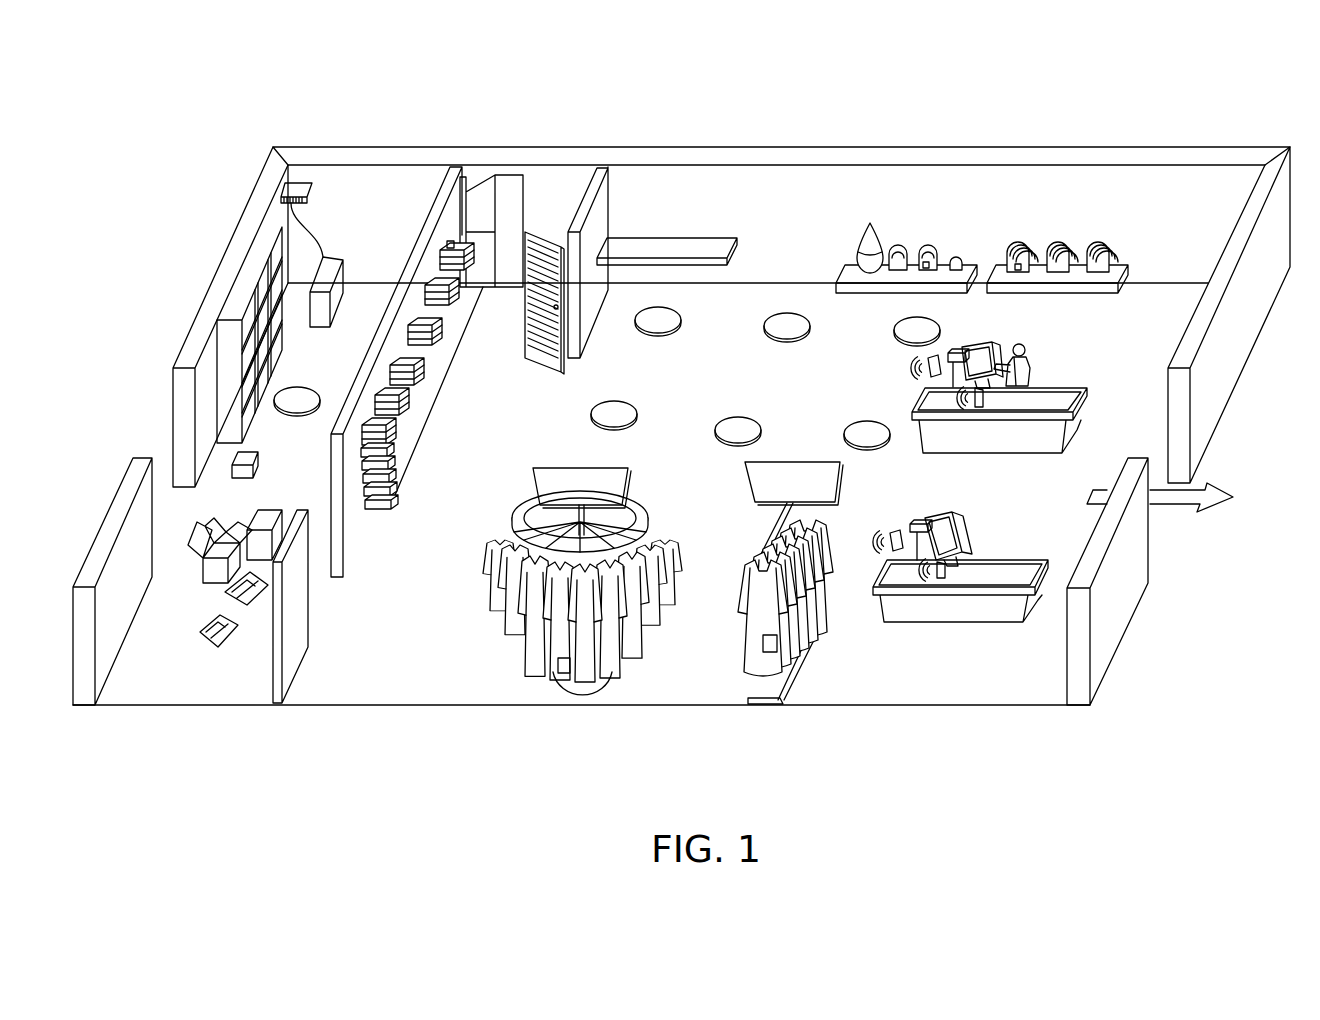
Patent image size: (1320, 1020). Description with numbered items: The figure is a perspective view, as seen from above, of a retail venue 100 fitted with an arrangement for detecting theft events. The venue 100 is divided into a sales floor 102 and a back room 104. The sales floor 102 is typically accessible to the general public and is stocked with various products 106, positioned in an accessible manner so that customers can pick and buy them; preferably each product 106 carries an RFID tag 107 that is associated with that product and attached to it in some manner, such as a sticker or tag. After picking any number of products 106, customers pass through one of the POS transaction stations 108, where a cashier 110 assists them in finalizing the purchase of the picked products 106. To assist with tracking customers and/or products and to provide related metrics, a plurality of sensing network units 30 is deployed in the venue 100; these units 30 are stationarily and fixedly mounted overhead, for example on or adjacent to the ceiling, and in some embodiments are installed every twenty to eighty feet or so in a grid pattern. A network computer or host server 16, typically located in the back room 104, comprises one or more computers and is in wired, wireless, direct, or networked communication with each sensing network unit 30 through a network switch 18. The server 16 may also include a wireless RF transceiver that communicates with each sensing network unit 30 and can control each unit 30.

The retail venue 100 is at (154, 118).
The sales floor 102 is at (377, 708).
The back room 104 is at (172, 692).
The host server 16 is at (343, 258).
The network switch 18 is at (312, 190).
The sensing network unit 30 is at (297, 416).
The product 106 is at (433, 259).
The RFID tag 107 is at (451, 241).
The POS transaction station 108 is at (1077, 352).
The cashier 110 is at (1025, 344).